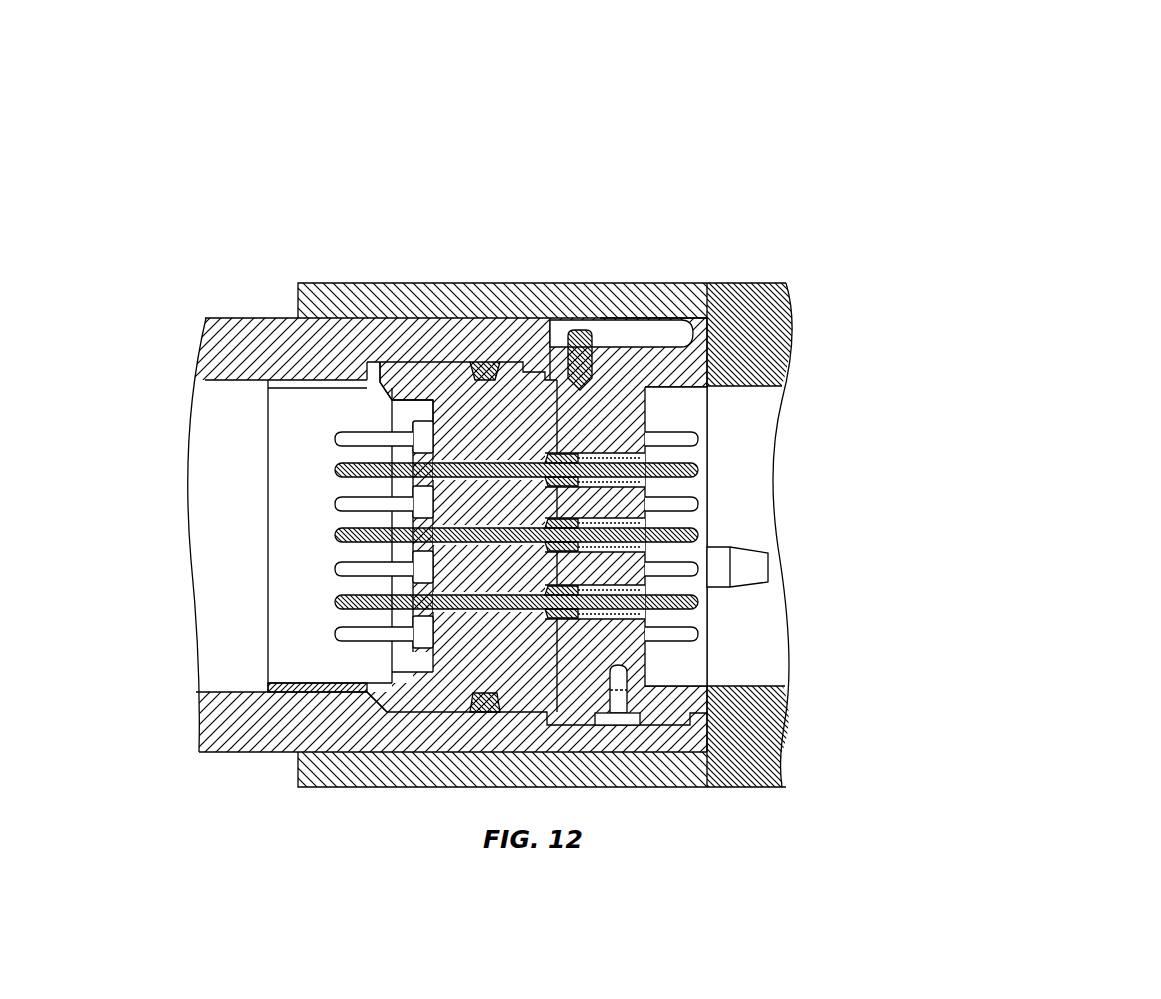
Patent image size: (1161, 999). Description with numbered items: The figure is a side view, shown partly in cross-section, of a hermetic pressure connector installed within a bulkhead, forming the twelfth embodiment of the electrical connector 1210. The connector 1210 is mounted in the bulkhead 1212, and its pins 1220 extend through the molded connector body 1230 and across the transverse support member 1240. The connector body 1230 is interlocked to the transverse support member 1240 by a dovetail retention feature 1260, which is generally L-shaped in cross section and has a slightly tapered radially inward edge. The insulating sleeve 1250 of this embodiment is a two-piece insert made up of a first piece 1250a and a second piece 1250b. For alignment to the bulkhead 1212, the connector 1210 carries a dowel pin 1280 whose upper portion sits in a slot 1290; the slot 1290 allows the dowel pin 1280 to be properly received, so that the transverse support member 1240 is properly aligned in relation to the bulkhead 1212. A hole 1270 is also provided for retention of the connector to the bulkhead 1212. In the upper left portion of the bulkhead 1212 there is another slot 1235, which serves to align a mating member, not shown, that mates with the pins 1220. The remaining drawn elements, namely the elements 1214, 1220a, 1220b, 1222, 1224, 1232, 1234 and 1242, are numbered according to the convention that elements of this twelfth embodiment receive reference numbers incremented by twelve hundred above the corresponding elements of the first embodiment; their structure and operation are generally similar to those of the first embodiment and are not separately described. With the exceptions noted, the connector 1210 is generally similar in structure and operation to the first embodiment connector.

The electrical connector 1210 is at (172, 700).
The bulkhead 1212 is at (443, 283).
The housing wall portion 1214 is at (650, 320).
The pins 1220 is at (648, 460).
The first contact pins 1220a is at (335, 505).
The second contact pins 1220b is at (703, 502).
The body lower portion 1222 is at (420, 650).
The lower seal 1224 is at (485, 712).
The molded connector body 1230 is at (452, 662).
The body shoulder 1232 is at (437, 410).
The upper seal 1234 is at (478, 355).
The slot 1235 is at (305, 387).
The transverse support member 1240 is at (603, 647).
The sleeves 1242 is at (653, 490).
The insulating sleeve 1250 is at (690, 400).
The two-piece insert first piece 1250a is at (727, 300).
The two-piece insert second piece 1250b is at (647, 423).
The dovetail retention feature 1260 is at (556, 330).
The hole 1270 is at (640, 718).
The dowel pin 1280 is at (586, 328).
The slot 1290 is at (613, 337).